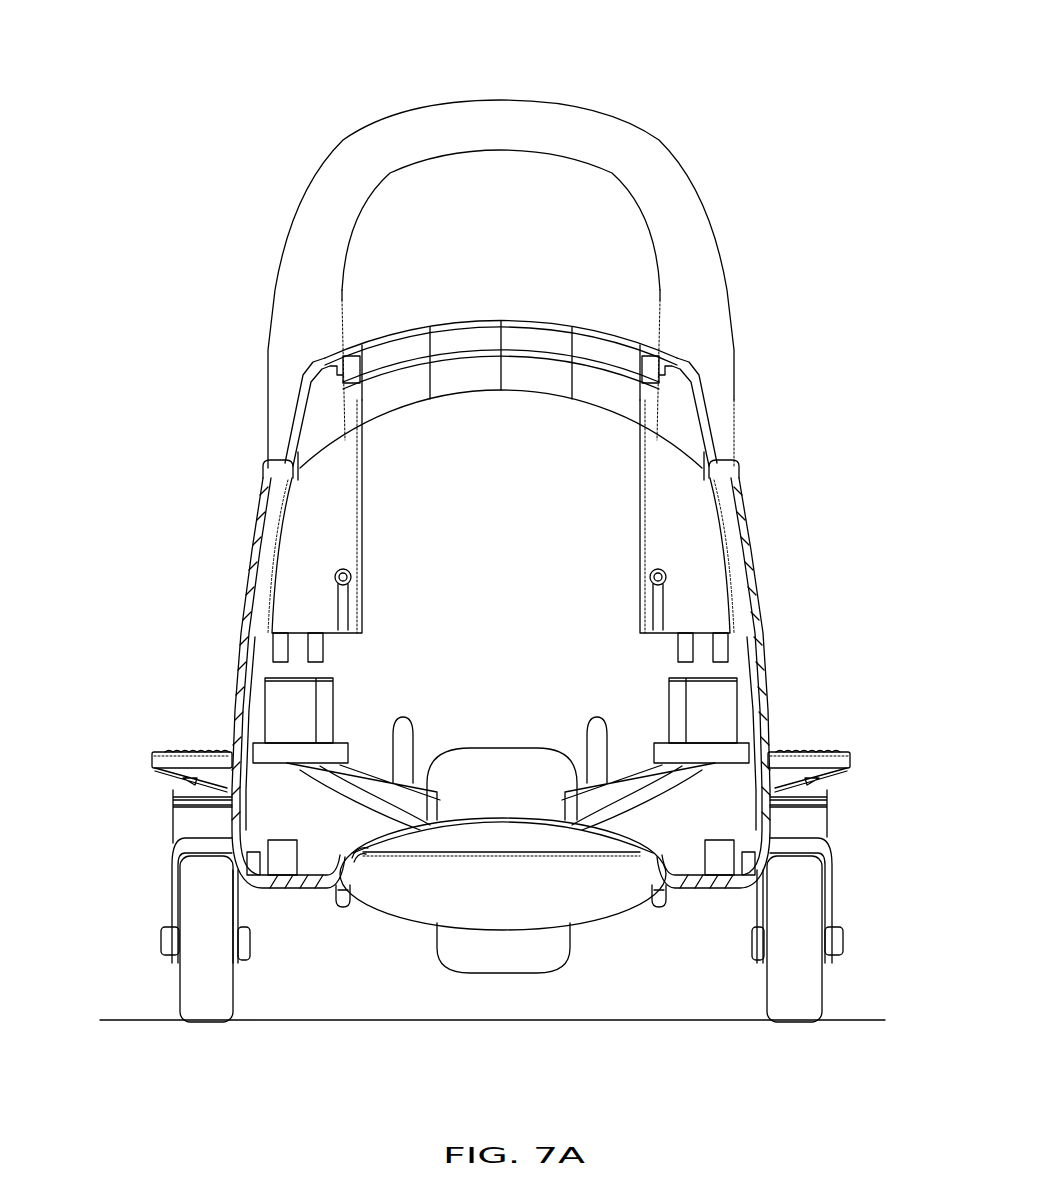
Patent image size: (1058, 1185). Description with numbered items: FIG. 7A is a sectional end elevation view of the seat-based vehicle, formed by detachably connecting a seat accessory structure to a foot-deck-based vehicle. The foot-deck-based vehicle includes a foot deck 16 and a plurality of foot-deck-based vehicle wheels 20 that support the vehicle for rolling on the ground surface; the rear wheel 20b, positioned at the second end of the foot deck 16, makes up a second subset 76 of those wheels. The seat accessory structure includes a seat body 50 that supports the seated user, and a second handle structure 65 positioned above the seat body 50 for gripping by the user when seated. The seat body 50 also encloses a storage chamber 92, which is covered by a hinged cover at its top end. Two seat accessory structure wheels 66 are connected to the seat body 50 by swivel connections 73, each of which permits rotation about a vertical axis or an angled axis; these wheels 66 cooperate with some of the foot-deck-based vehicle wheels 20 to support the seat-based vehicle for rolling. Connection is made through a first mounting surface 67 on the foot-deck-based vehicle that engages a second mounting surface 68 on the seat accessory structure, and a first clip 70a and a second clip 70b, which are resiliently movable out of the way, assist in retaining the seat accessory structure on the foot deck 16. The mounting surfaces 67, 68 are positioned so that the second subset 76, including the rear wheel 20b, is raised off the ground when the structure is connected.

The foot deck 16 is at (603, 897).
The foot-deck-based vehicle wheels 20 is at (385, 1040).
The rear wheel 20b is at (503, 948).
The second subset of the plurality of foot-deck-based vehicle wheels 76 is at (450, 957).
The seat body 50 is at (265, 473).
The second handle structure 65 is at (560, 128).
The seat accessory structure wheel 66 is at (197, 910).
The first mounting surface 67 is at (365, 852).
The second mounting surface 68 is at (347, 853).
The first clip 70a is at (340, 900).
The second clip 70b is at (667, 907).
The swivel connection 73 is at (175, 797).
The storage chamber 92 is at (590, 578).